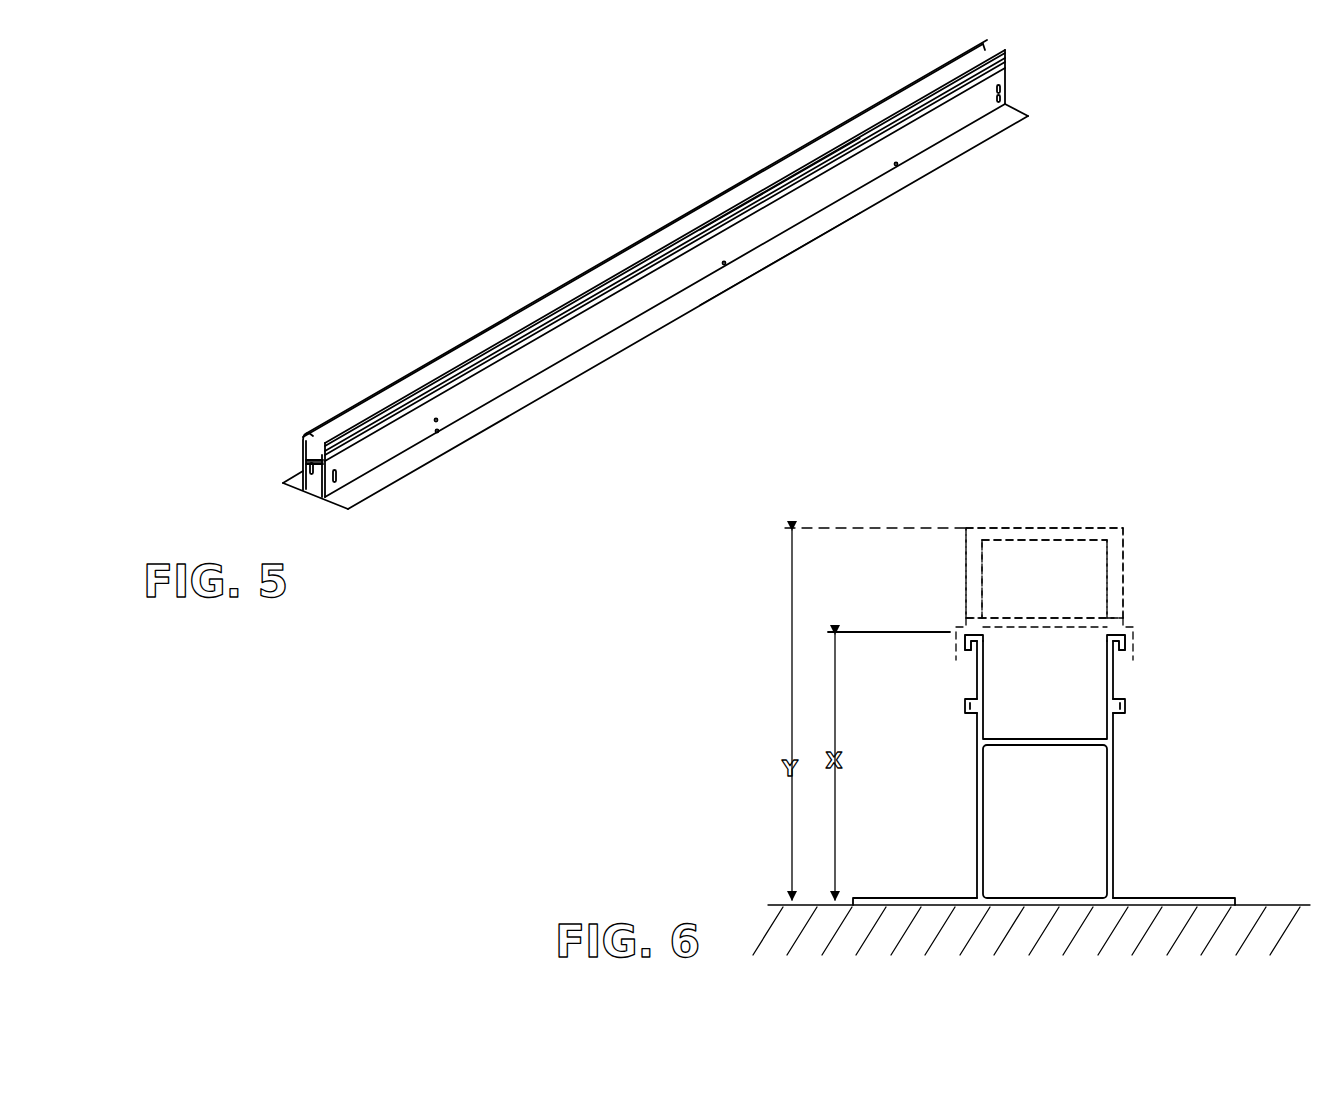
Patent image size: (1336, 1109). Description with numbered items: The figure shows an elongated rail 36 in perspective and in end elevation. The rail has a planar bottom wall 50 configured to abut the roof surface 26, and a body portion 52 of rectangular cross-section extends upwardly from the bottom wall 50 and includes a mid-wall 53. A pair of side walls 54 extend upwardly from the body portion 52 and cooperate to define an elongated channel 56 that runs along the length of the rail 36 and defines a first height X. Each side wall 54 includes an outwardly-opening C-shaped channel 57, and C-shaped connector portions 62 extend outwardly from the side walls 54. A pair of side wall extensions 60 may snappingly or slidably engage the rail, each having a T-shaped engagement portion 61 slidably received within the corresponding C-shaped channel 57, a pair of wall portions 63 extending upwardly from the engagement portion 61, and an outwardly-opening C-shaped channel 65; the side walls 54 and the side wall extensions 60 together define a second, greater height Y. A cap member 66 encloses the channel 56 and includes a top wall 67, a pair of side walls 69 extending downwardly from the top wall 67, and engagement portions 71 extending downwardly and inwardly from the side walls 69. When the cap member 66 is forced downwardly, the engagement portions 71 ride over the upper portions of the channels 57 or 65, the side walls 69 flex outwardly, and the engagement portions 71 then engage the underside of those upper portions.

In FIG. 6, the roof surface 26 is at (1280, 906).
In FIG. 5, the elongated rail 36 is at (722, 153).
In FIG. 6, the elongated rail 36 is at (976, 731).
In FIG. 5, the planar bottom wall 50 is at (790, 243).
In FIG. 6, the planar bottom wall 50 is at (1190, 898).
In FIG. 5, the body portion 52 is at (835, 190).
In FIG. 6, the body portion 52 is at (1120, 744).
In FIG. 6, the mid-wall 53 is at (978, 817).
In FIG. 6, the side wall 54 is at (963, 665).
In FIG. 5, the elongated channel 56 is at (318, 455).
In FIG. 6, the elongated channel 56 is at (1025, 715).
In FIG. 6, the outwardly-opening C-shaped channel 57 is at (963, 633).
In FIG. 6, the side wall extension 60 is at (1123, 565).
In FIG. 6, the T-shaped engagement portion 61 is at (962, 660).
In FIG. 6, the C-shaped connector portion 62 is at (1130, 652).
In FIG. 6, the wall portion 63 is at (942, 550).
In FIG. 6, the outwardly-opening C-shaped channel 65 is at (1013, 547).
In FIG. 6, the cap member 66 is at (1040, 525).
In FIG. 6, the top wall 67 is at (998, 527).
In FIG. 6, the side wall 69 is at (965, 580).
In FIG. 6, the engagement portion 71 is at (963, 640).